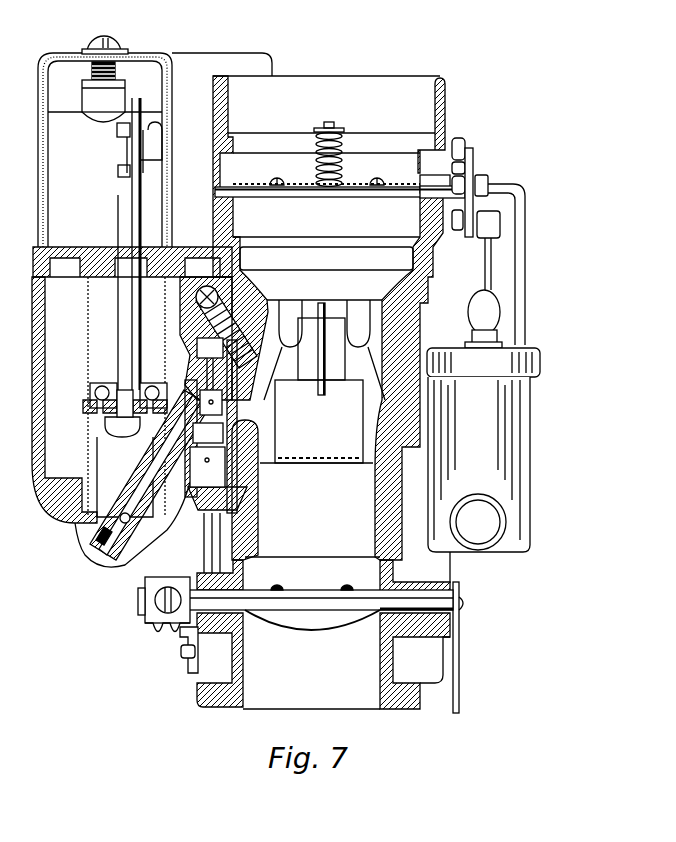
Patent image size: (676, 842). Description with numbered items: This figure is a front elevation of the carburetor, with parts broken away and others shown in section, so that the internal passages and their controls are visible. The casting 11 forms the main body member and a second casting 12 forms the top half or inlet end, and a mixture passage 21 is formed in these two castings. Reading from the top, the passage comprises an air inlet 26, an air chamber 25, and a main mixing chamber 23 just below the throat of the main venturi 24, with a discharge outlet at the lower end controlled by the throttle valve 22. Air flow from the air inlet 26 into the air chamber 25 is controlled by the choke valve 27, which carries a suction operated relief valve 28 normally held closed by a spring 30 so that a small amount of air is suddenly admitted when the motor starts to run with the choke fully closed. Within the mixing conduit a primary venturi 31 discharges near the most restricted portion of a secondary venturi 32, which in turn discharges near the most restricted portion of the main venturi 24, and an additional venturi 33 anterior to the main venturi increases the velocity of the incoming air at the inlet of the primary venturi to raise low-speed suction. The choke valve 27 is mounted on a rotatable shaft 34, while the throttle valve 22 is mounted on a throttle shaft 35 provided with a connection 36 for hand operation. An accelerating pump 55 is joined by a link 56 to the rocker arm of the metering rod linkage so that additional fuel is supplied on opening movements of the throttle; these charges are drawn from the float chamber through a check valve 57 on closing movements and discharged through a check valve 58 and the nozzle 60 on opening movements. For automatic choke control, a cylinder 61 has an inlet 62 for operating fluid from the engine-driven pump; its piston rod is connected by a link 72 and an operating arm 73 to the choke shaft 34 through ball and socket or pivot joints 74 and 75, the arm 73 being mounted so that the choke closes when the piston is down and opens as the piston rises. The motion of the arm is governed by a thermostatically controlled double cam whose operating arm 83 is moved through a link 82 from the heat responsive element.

The main body member casting 11 is at (424, 337).
The second casting 12 is at (446, 100).
The mixture passage 21 is at (380, 673).
The throttle valve 22 is at (305, 620).
The main mixing chamber 23 is at (312, 534).
The main venturi 24 is at (373, 477).
The air chamber 25 is at (326, 318).
The air inlet 26 is at (312, 76).
The choke valve 27 is at (354, 181).
The suction operated relief valve 28 is at (305, 196).
The spring 30 is at (318, 145).
The primary venturi 31 is at (318, 333).
The secondary venturi 32 is at (303, 396).
The venturi 33 is at (427, 283).
The rotatable shaft 34 is at (373, 197).
The throttle shaft 35 is at (138, 600).
The connection 36 is at (157, 637).
The accelerating pump 55 is at (88, 398).
The link 56 is at (152, 157).
The check valve 57 is at (232, 420).
The check valve 58 is at (203, 375).
The nozzle 60 is at (226, 406).
The cylinder 61 is at (485, 442).
The inlet 62 is at (490, 512).
The link 72 is at (491, 262).
The operating arm 73 is at (470, 165).
The ball and socket or pivot joint 74 is at (500, 320).
The ball and socket or pivot joint 75 is at (483, 182).
The link 82 is at (525, 215).
The operating arm 83 is at (466, 141).